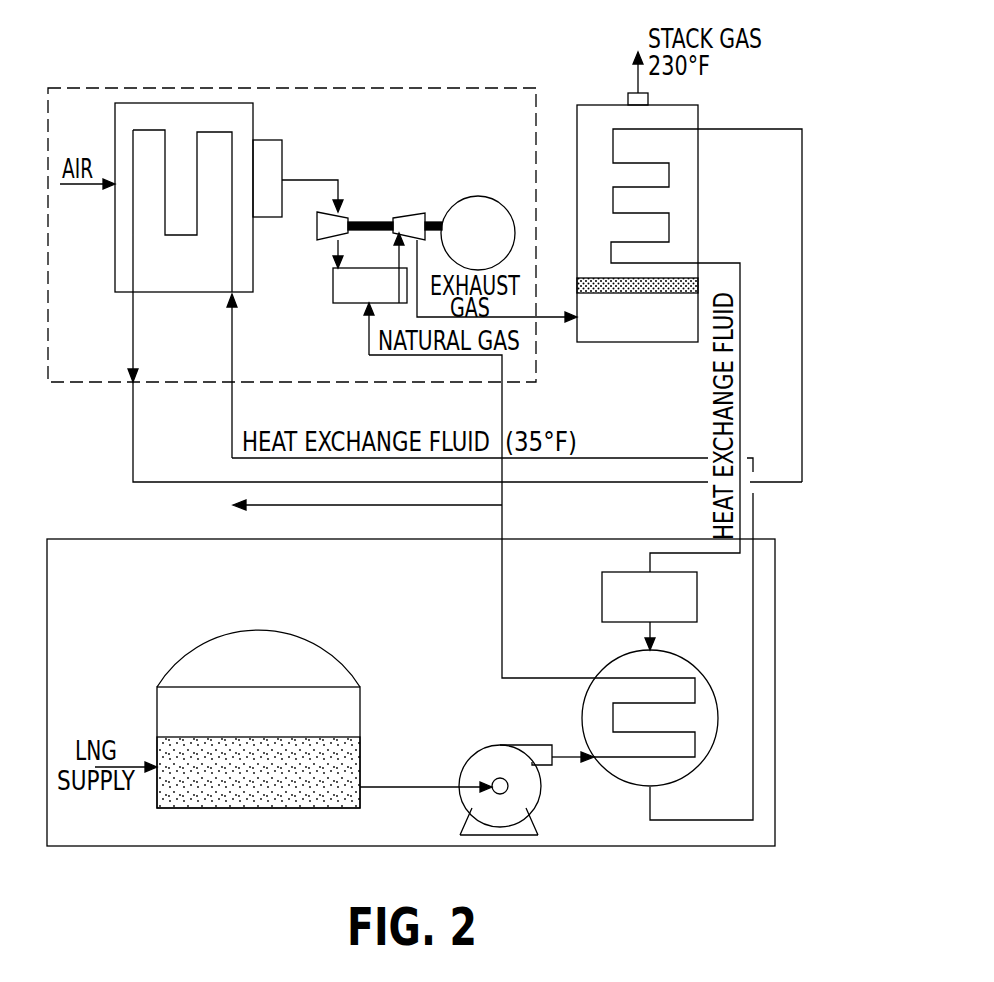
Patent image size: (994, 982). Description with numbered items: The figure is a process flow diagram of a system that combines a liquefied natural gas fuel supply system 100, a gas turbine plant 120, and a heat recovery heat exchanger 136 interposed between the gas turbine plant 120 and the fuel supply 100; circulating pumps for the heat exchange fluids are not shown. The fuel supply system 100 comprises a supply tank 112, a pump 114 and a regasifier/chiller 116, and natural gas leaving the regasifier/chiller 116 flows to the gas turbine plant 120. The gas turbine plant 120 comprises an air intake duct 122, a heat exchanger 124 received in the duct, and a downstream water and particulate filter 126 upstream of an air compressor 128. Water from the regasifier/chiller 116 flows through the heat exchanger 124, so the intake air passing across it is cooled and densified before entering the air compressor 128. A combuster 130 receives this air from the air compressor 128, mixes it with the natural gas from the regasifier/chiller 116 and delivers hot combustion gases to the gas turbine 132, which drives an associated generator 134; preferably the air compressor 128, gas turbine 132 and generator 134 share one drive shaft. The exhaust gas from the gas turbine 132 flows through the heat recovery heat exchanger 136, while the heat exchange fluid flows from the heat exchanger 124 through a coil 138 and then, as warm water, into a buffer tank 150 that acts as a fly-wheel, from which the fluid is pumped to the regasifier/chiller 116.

The liquefied natural gas fuel supply system 100 is at (775, 767).
The supply tank 112 is at (279, 727).
The pump 114 is at (482, 747).
The regasifier/chiller 116 is at (690, 658).
The gas turbine plant 120 is at (350, 88).
The air intake duct 122 is at (167, 103).
The heat exchanger 124 is at (218, 132).
The water and particulate filter 126 is at (282, 140).
The air compressor 128 is at (347, 212).
The combuster 130 is at (388, 299).
The gas turbine 132 is at (410, 216).
The generator 134 is at (497, 247).
The heat recovery heat exchanger 136 is at (700, 117).
The coil 138 is at (670, 173).
The buffer tank 150 is at (602, 596).